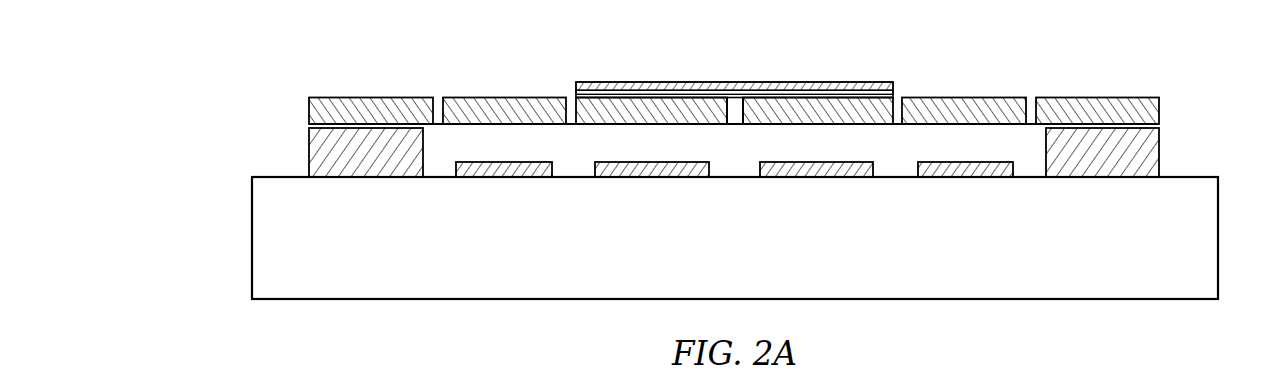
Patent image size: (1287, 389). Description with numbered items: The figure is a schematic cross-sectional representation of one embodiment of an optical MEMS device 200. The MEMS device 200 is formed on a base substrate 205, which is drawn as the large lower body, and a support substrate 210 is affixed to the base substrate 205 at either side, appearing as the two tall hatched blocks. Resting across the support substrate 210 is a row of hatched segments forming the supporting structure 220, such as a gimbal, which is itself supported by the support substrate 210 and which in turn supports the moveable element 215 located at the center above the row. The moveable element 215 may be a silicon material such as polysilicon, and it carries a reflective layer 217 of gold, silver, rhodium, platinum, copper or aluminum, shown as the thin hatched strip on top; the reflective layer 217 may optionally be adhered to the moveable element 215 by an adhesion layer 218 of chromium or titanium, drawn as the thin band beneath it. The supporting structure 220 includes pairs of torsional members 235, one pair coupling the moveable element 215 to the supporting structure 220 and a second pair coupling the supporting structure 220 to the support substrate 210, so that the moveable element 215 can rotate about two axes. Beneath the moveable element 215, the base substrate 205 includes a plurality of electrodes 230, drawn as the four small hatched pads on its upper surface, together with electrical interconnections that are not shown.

The optical MEMS device 200 is at (710, 160).
The base substrate 205 is at (1208, 238).
The support substrate 210 is at (1148, 148).
The moveable element 215 is at (734, 59).
The reflective layer 217 is at (867, 87).
The adhesion layer 218 is at (807, 94).
The supporting structure 220 is at (965, 107).
The electrodes 230 is at (520, 170).
The torsional members 235 is at (737, 100).